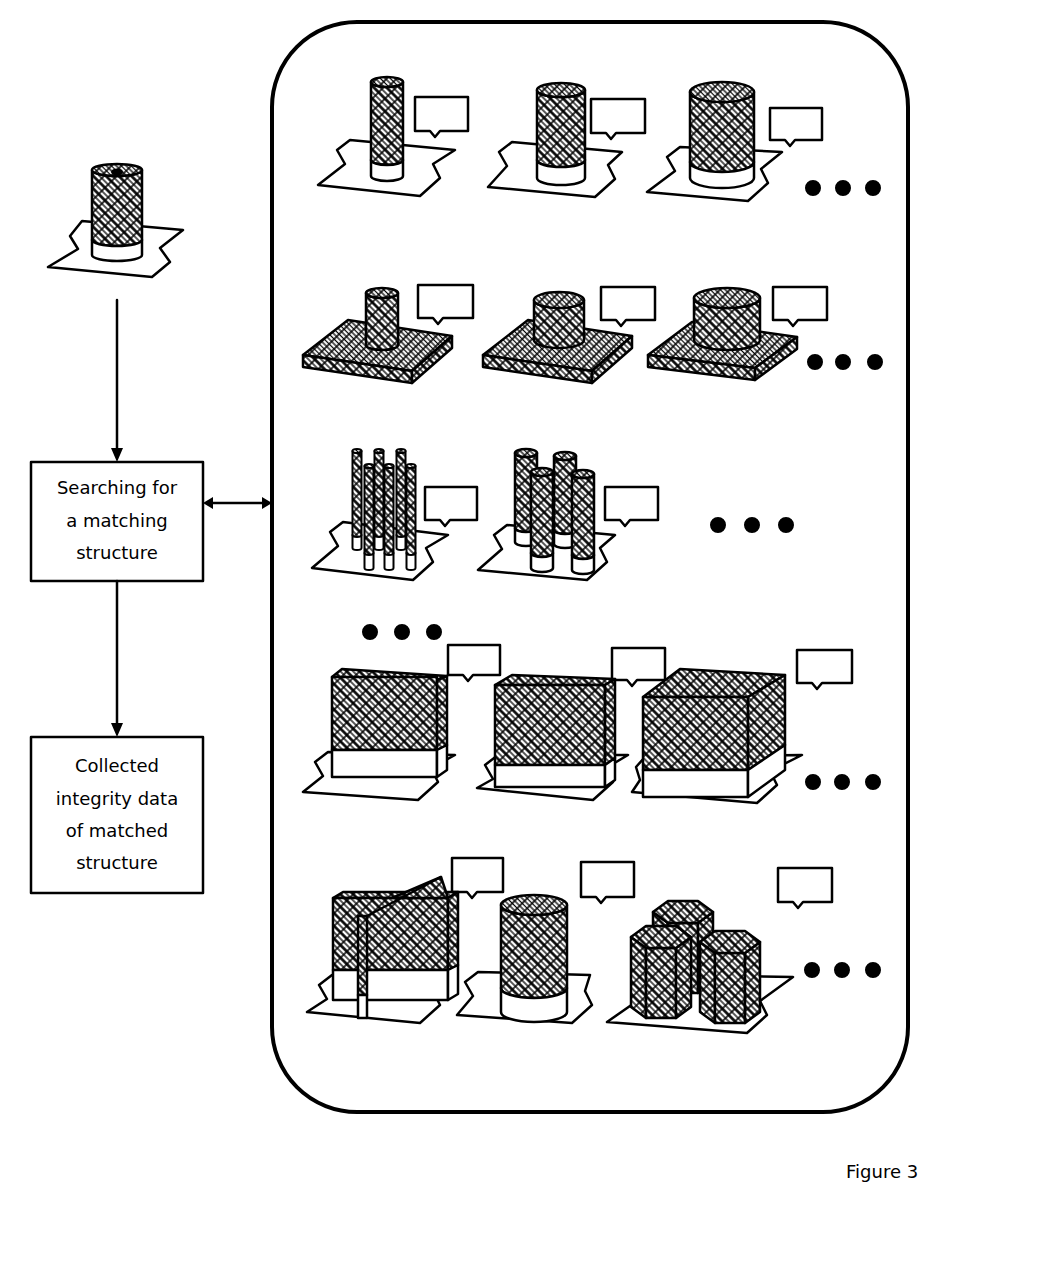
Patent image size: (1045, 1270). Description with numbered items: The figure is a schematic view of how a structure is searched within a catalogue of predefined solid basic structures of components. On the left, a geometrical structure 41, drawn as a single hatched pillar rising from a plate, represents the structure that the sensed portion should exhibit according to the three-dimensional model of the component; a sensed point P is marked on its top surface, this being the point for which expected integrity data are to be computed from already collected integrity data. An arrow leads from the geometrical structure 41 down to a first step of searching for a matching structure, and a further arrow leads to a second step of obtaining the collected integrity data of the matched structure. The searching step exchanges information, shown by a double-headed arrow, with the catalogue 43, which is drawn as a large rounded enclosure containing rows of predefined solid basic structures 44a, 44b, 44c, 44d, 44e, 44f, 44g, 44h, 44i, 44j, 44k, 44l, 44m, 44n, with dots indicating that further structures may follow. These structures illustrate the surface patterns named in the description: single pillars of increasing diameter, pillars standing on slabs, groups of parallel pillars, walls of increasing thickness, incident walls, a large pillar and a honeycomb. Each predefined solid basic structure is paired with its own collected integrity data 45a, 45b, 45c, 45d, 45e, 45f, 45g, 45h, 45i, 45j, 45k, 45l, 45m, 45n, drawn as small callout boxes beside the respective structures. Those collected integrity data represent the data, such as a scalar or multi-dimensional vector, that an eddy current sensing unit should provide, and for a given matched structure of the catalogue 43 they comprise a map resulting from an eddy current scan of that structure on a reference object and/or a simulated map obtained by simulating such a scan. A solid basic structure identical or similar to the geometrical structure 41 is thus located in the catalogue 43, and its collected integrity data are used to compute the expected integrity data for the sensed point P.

The sensed point P is at (108, 171).
The geometrical structure 41 is at (115, 228).
The catalogue 43 is at (273, 385).
The predefined solid basic structure 44a is at (387, 163).
The predefined solid basic structure 44b is at (555, 165).
The predefined solid basic structure 44c is at (710, 170).
The predefined solid basic structure 44d is at (363, 340).
The predefined solid basic structure 44e is at (532, 350).
The predefined solid basic structure 44f is at (723, 375).
The predefined solid basic structure 44g is at (362, 558).
The predefined solid basic structure 44h is at (545, 553).
The predefined solid basic structure 44i is at (393, 718).
The predefined solid basic structure 44j is at (555, 735).
The predefined solid basic structure 44k is at (720, 745).
The predefined solid basic structure 44l is at (380, 960).
The predefined solid basic structure 44m is at (530, 990).
The predefined solid basic structure 44n is at (672, 1000).
The collected integrity data 45a is at (452, 124).
The collected integrity data 45b is at (625, 126).
The collected integrity data 45c is at (796, 135).
The collected integrity data 45d is at (458, 311).
The collected integrity data 45e is at (640, 313).
The collected integrity data 45f is at (808, 315).
The collected integrity data 45g is at (448, 510).
The collected integrity data 45h is at (630, 510).
The collected integrity data 45i is at (467, 670).
The collected integrity data 45j is at (637, 675).
The collected integrity data 45k is at (815, 678).
The collected integrity data 45l is at (470, 872).
The collected integrity data 45m is at (607, 890).
The collected integrity data 45n is at (797, 893).